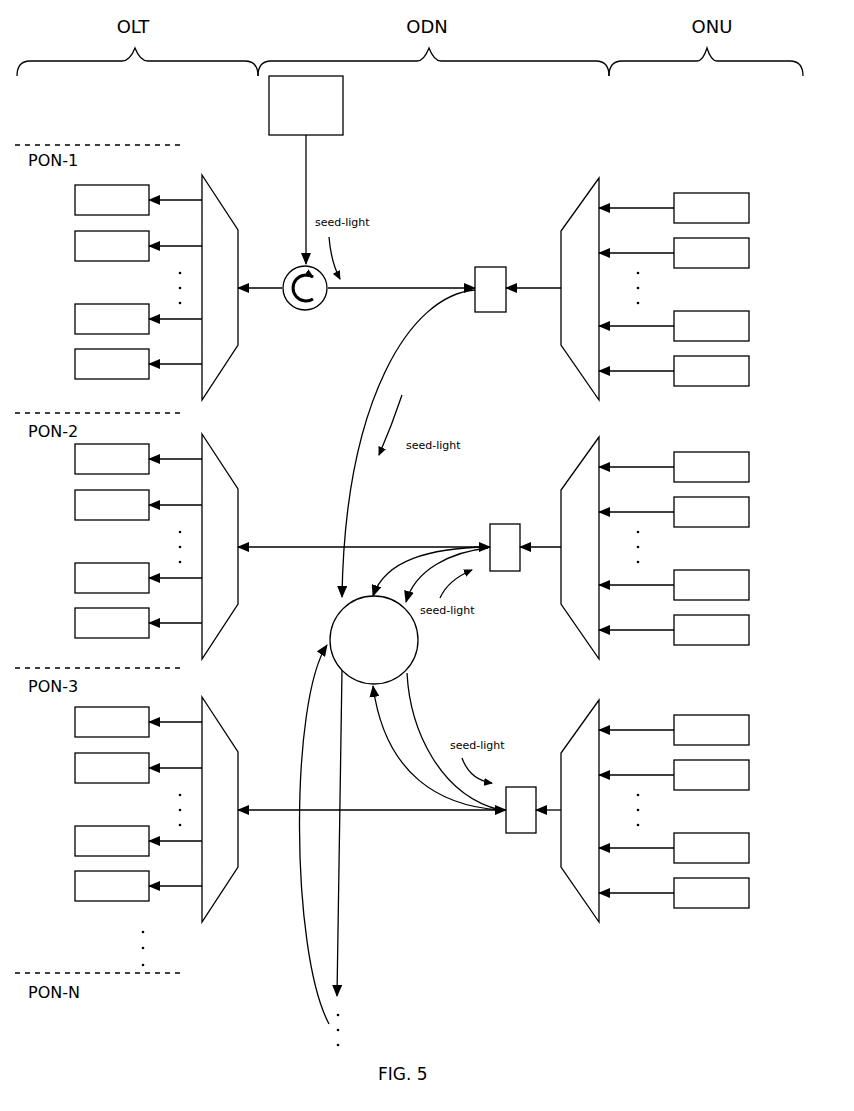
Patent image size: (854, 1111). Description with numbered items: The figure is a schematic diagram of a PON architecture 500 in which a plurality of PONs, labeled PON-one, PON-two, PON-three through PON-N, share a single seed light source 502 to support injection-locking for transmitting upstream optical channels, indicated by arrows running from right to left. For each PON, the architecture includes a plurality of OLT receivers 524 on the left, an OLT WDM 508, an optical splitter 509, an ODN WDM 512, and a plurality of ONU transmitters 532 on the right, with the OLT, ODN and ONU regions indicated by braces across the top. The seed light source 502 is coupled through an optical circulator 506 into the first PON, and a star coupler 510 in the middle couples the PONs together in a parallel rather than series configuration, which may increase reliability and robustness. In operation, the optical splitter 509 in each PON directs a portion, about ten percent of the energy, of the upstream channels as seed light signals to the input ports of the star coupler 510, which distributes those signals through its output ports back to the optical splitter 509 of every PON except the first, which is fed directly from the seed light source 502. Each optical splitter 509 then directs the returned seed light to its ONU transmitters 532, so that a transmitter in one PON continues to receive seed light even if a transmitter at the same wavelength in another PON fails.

The PON architecture 500 is at (629, 995).
The seed light source 502 is at (345, 116).
The optical circulator 506 is at (306, 313).
The OLT WDM 508 is at (213, 197).
The optical splitter 509 is at (506, 267).
The star coupler 510 is at (418, 655).
The ODN WDM 512 is at (567, 222).
The OLT receivers 524 is at (75, 886).
The ONU transmitters 532 is at (765, 893).